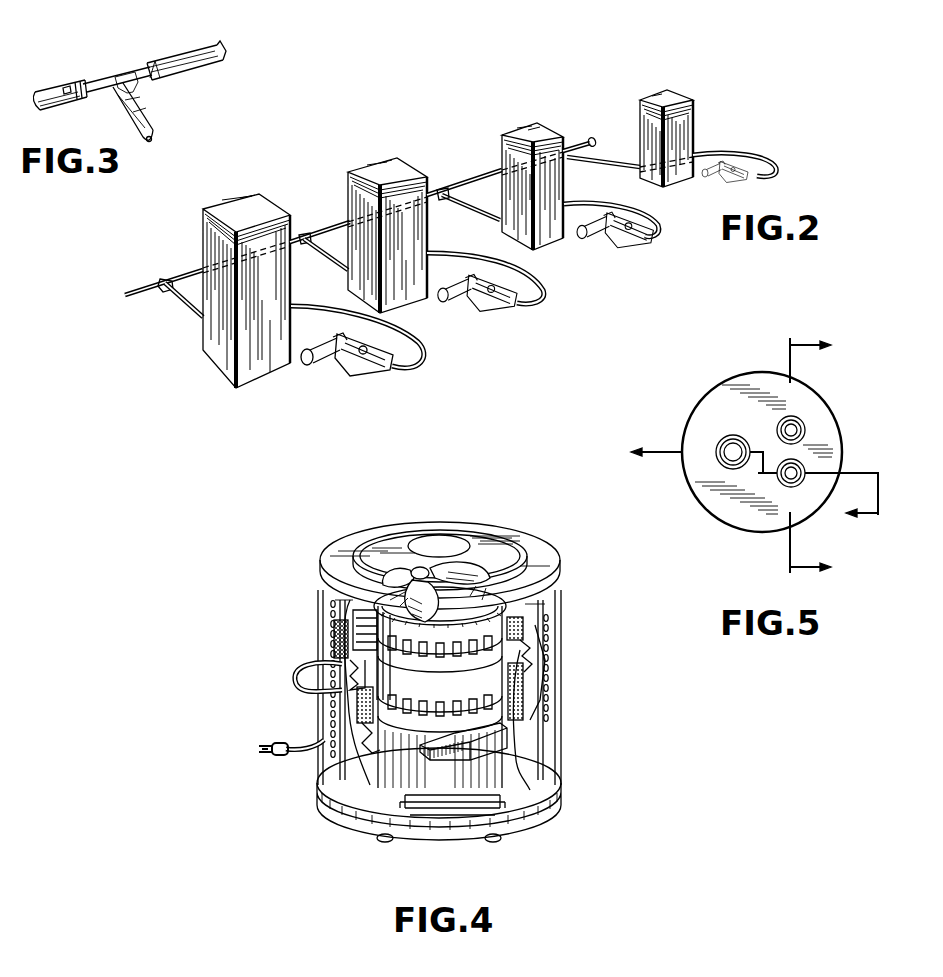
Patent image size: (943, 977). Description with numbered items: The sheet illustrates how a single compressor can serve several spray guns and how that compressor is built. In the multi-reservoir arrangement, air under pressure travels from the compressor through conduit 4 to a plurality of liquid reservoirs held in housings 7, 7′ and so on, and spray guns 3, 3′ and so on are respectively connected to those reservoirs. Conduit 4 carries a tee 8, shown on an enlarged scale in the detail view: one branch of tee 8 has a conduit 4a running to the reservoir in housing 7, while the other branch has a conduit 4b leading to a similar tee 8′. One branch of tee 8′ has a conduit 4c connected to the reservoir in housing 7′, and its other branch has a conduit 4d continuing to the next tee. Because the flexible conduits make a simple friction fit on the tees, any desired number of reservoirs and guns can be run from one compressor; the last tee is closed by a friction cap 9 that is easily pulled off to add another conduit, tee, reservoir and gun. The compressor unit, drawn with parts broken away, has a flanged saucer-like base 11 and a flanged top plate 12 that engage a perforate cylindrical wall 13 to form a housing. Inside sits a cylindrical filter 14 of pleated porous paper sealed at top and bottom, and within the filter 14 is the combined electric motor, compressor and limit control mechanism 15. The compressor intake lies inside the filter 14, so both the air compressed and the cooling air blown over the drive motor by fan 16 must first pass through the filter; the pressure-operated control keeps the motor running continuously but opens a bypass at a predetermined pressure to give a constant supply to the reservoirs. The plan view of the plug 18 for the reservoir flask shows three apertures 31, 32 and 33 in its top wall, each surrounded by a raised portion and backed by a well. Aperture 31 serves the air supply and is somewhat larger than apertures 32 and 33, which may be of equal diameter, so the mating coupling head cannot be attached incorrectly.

In FIG. 2, the spray gun 3 is at (383, 373).
In FIG. 2, the spray gun 3′ is at (512, 305).
In FIG. 3, the conduit 4 is at (52, 92).
In FIG. 2, the conduit 4 is at (125, 295).
In FIG. 3, the conduit 4a is at (152, 118).
In FIG. 2, the conduit 4a is at (182, 307).
In FIG. 3, the conduit 4b is at (185, 52).
In FIG. 2, the conduit 4b is at (192, 270).
In FIG. 2, the conduit 4c is at (333, 262).
In FIG. 2, the conduit 4d is at (330, 225).
In FIG. 2, the housing 7 is at (228, 206).
In FIG. 2, the housing 7′ is at (377, 168).
In FIG. 3, the tee 8 is at (112, 75).
In FIG. 2, the tee 8 is at (165, 283).
In FIG. 5, the tee 8 is at (820, 457).
In FIG. 2, the tee 8′ is at (303, 236).
In FIG. 2, the friction cap 9 is at (594, 138).
In FIG. 4, the base 11 is at (555, 793).
In FIG. 5, the top plate 12 is at (759, 483).
In FIG. 4, the top plate 12 is at (485, 530).
In FIG. 4, the perforate cylindrical wall 13 is at (520, 732).
In FIG. 4, the cylindrical filter 14 is at (373, 685).
In FIG. 4, the combined electric motor, compressor and limit control mechanism 15 is at (407, 673).
In FIG. 4, the fan 16 is at (520, 573).
In FIG. 5, the plug 18 is at (727, 402).
In FIG. 5, the aperture 31 is at (730, 453).
In FIG. 5, the aperture 32 is at (800, 432).
In FIG. 5, the aperture 33 is at (795, 480).